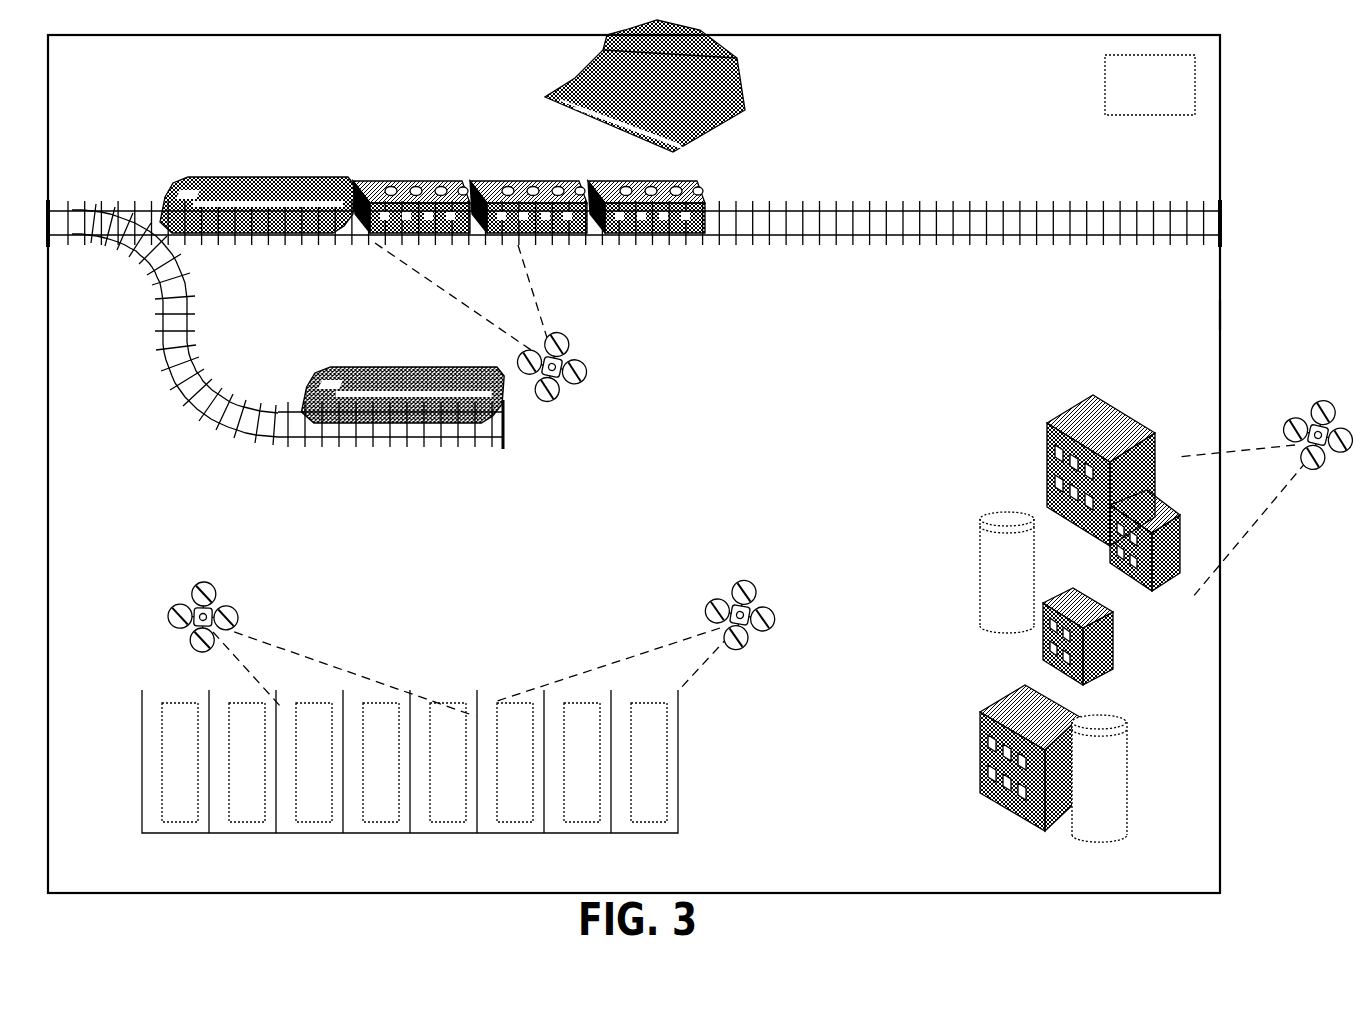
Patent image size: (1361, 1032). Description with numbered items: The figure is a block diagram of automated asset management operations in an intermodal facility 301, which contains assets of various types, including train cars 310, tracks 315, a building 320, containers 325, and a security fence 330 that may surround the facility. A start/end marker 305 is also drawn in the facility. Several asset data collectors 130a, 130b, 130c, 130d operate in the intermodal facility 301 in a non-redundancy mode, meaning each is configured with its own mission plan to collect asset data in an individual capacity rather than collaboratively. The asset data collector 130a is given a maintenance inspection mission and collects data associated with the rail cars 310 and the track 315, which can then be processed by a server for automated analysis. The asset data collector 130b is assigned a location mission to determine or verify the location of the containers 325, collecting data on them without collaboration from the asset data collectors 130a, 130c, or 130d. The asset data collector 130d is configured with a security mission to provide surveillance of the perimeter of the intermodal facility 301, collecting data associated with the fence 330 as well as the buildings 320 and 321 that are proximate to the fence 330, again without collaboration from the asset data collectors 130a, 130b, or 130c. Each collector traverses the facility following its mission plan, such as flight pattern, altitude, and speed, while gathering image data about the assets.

The intermodal facility 301 is at (634, 464).
The start/end location 305 is at (1105, 85).
The train cars 310 is at (370, 181).
The tracks 315 is at (886, 208).
The building 320 is at (1018, 482).
The building 321 is at (545, 96).
The containers 325 is at (430, 657).
The security fence 330 is at (1220, 314).
The asset data collector 130a is at (587, 375).
The asset data collector 130b is at (198, 584).
The asset data collector 130c is at (737, 583).
The asset data collector 130d is at (1315, 405).